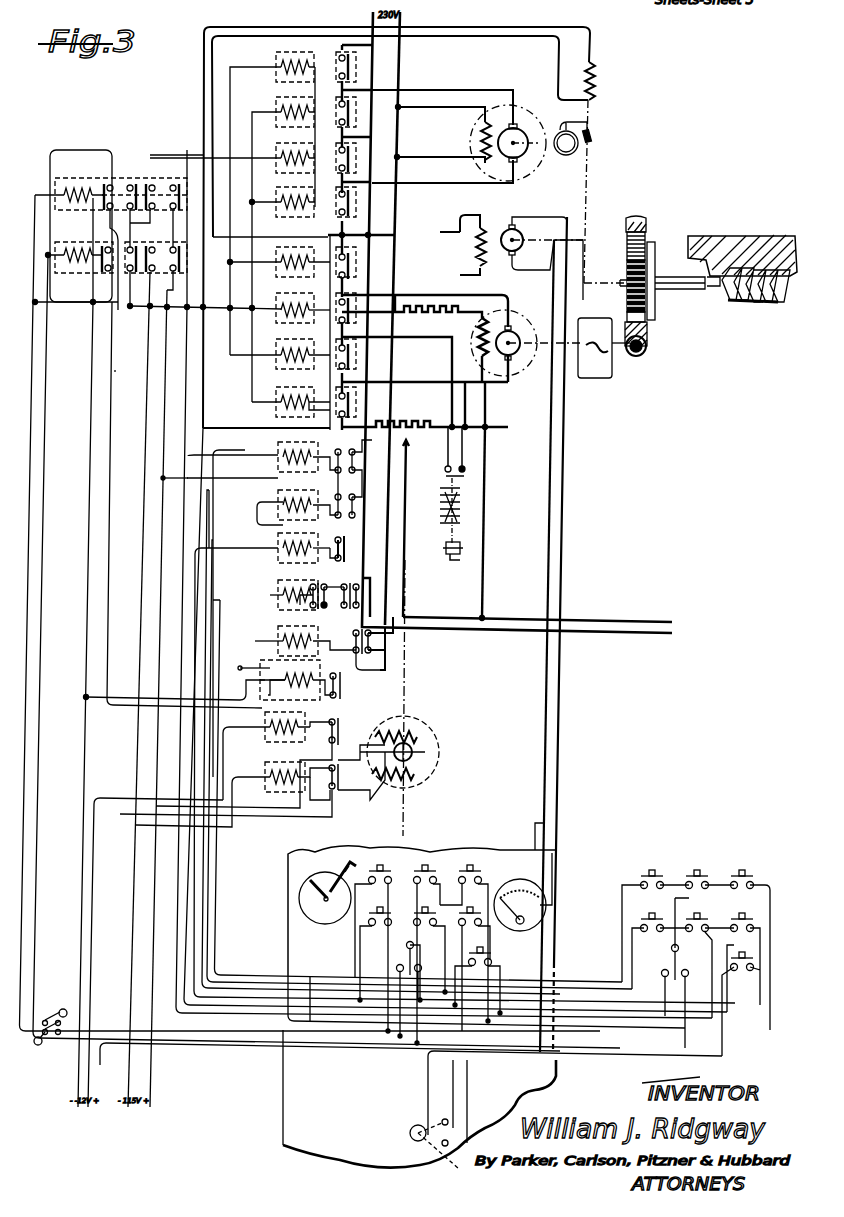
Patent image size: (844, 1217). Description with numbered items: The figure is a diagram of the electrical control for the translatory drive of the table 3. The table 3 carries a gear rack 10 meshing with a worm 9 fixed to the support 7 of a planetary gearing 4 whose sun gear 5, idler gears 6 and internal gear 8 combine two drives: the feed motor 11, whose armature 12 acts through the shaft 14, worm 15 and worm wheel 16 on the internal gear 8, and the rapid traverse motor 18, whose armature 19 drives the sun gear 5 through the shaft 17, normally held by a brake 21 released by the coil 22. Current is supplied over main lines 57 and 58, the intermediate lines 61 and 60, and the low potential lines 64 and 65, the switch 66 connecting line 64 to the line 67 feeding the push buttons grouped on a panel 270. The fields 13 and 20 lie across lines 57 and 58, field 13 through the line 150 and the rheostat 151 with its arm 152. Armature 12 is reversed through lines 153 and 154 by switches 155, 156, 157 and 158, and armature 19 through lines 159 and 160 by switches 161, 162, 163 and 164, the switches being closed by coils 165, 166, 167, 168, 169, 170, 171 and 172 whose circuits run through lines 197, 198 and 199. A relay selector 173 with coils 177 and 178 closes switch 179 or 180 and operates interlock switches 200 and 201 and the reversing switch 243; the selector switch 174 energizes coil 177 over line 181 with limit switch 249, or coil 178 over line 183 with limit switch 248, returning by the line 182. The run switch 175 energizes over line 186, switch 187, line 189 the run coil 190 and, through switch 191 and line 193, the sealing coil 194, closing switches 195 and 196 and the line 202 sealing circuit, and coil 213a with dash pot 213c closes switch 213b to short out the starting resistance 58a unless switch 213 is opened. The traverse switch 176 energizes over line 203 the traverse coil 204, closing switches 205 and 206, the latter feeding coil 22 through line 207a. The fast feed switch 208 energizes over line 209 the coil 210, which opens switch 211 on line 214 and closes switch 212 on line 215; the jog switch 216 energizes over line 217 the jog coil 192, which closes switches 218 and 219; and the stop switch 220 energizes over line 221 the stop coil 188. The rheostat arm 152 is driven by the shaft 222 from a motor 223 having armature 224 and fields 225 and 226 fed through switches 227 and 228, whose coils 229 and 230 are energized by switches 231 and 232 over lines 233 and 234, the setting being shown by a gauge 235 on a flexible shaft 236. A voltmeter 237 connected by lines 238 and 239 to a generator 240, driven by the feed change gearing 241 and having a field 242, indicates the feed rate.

The table 3 is at (769, 247).
The planetary gearing 4 is at (645, 224).
The sun gear 5 is at (626, 292).
The idler gears 6 is at (626, 246).
The rotatable support 7 is at (654, 306).
The internal gear 8 is at (648, 323).
The worm 9 is at (750, 306).
The gear rack 10 is at (724, 278).
The feed motor 11 is at (522, 320).
The armature 12 is at (524, 332).
The field 13 is at (480, 314).
The shaft 14 is at (610, 350).
The worm 15 is at (646, 354).
The worm wheel 16 is at (644, 340).
The shaft 17 is at (594, 183).
The rapid traverse motor 18 is at (518, 119).
The armature 19 is at (520, 137).
The field 20 is at (472, 129).
The brake 21 is at (561, 164).
The electric coil 22 is at (590, 84).
The main line 57 is at (372, 19).
The main line 58 is at (402, 19).
The starting resistance 58a is at (440, 296).
The main line 60 is at (131, 1106).
The line 61 is at (154, 1106).
The main line 64 is at (88, 1100).
The main line 65 is at (90, 974).
The manually operable switch 66 is at (438, 1128).
The line 67 is at (472, 1097).
The line 150 is at (482, 424).
The rheostat 151 is at (416, 423).
The adjustable arm 152 is at (408, 444).
The line 153 is at (422, 294).
The line 154 is at (398, 383).
The switch 155 is at (335, 257).
The switch 156 is at (368, 354).
The switch 157 is at (368, 396).
The switch 158 is at (362, 320).
The line 159 is at (456, 90).
The line 160 is at (428, 174).
The switch 161 is at (342, 58).
The switch 162 is at (344, 150).
The switch 163 is at (344, 196).
The switch 164 is at (344, 106).
The coil 165 is at (294, 296).
The coil 166 is at (292, 385).
The coil 167 is at (284, 417).
The coil 168 is at (294, 338).
The coil 169 is at (286, 62).
The coil 170 is at (288, 149).
The coil 171 is at (286, 194).
The coil 172 is at (286, 106).
The relay selector 173 is at (82, 212).
The selector switch 174 is at (402, 958).
The run switch 175 is at (440, 862).
The traverse switch 176 is at (426, 932).
The coil 177 is at (111, 235).
The coil 178 is at (75, 269).
The switch 179 is at (144, 184).
The switch 180 is at (126, 300).
The line 181 is at (22, 951).
The line 182 is at (82, 704).
The line 183 is at (36, 899).
The line 186 is at (240, 566).
The switch 187 is at (350, 543).
The stop coil 188 is at (266, 544).
The line 189 is at (255, 521).
The run coil 190 is at (268, 497).
The switch 191 is at (304, 587).
The jog coil 192 is at (270, 584).
The line 193 is at (260, 681).
The sealing coil 194 is at (268, 696).
The switch 195 is at (362, 488).
The switch 196 is at (234, 670).
The line 197 is at (315, 431).
The line 198 is at (167, 150).
The line 199 is at (157, 315).
The interlock switch 200 is at (108, 272).
The interlock switch 201 is at (106, 186).
The line 202 is at (109, 373).
The line 203 is at (209, 961).
The traverse coil 204 is at (280, 455).
The switch 205 is at (316, 455).
The switch 206 is at (368, 446).
The line 207a is at (237, 452).
The fast feed switch 208 is at (483, 926).
The line 209 is at (227, 937).
The coil 210 is at (278, 646).
The switch 211 is at (386, 668).
The switch 212 is at (358, 664).
The switch 213 is at (356, 630).
The coil 213a is at (472, 508).
The switch 213b is at (485, 473).
The dash pot 213c is at (474, 552).
The line 214 is at (400, 644).
The line 215 is at (398, 658).
The jog switch 216 is at (482, 962).
The line 217 is at (227, 920).
The switch 218 is at (347, 578).
The switch 219 is at (384, 578).
The stop switch 220 is at (490, 878).
The line 221 is at (227, 902).
The shaft 222 is at (413, 691).
The motor 223 is at (423, 721).
The armature 224 is at (416, 752).
The series field 225 is at (424, 779).
The series field 226 is at (422, 738).
The switch 227 is at (229, 790).
The switch 228 is at (332, 744).
The actuating coil 229 is at (270, 766).
The actuating coil 230 is at (270, 737).
The manually operable switch 231 is at (373, 930).
The manually operable switch 232 is at (395, 862).
The line 233 is at (237, 886).
The line 234 is at (235, 869).
The gauge 235 is at (314, 877).
The flexible shaft 236 is at (392, 814).
The voltmeter 237 is at (556, 914).
The line 238 is at (540, 834).
The line 239 is at (550, 818).
The generator 240 is at (520, 238).
The feed change gearing 241 is at (596, 378).
The field 242 is at (494, 230).
The reversing switch 243 is at (173, 179).
The limit switch 248 is at (49, 1009).
The limit switch 249 is at (53, 1050).
The panel 270 is at (564, 971).